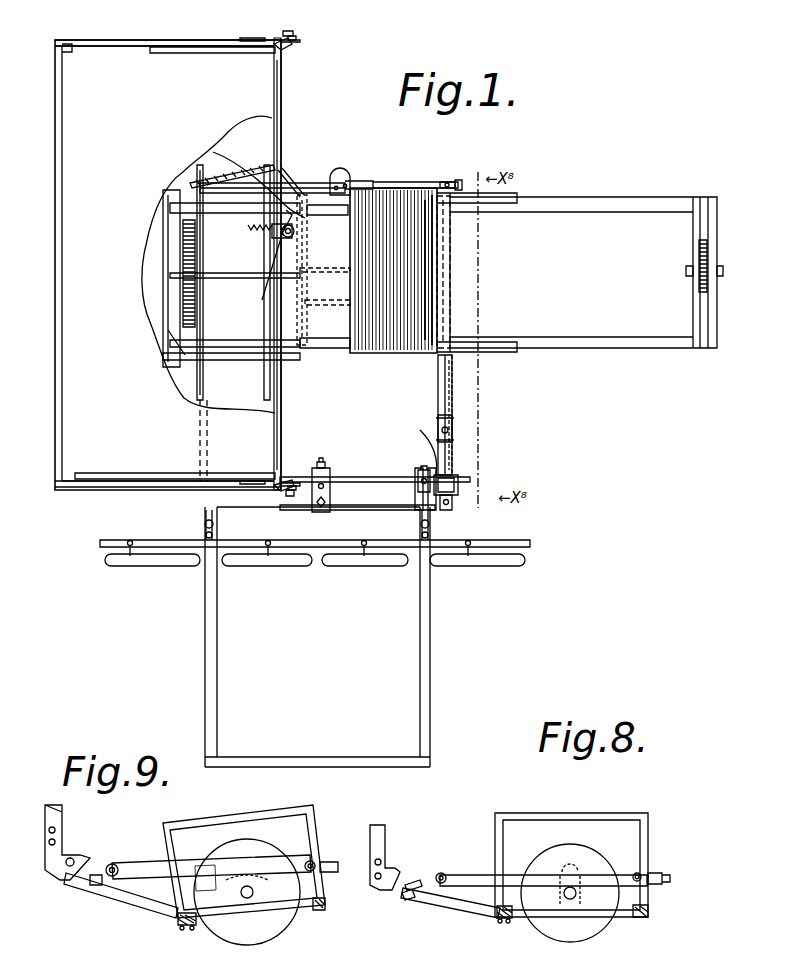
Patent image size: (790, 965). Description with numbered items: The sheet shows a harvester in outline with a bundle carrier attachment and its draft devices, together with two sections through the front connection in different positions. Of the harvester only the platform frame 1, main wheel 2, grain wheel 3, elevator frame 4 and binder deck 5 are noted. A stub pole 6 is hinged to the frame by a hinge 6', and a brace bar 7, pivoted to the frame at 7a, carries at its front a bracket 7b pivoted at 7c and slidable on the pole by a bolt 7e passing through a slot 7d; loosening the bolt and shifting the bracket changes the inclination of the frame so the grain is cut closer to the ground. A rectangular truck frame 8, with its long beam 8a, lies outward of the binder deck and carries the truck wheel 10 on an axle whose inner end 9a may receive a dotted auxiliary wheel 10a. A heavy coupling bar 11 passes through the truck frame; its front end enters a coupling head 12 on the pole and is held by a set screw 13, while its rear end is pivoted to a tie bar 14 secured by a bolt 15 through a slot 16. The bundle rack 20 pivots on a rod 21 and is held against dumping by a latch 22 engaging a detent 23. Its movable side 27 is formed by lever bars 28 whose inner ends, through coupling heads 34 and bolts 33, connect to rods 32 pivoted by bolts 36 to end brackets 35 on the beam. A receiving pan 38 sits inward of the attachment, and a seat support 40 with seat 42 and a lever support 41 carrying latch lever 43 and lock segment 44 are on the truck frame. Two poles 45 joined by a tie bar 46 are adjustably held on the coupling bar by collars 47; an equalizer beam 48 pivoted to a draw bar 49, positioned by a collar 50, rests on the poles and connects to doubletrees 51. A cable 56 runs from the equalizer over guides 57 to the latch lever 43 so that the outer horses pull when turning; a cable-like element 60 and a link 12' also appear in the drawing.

In FIG. 1, the platform frame 1 is at (578, 345).
In FIG. 1, the main or traction wheel 2 is at (450, 240).
In FIG. 9, the main or traction wheel 2 is at (252, 840).
In FIG. 8, the main or traction wheel 2 is at (595, 845).
In FIG. 1, the grain wheel 3 is at (704, 262).
In FIG. 1, the elevator frame 4 is at (500, 196).
In FIG. 1, the binder deck 5 is at (385, 352).
In FIG. 1, the stub pole 6 is at (465, 415).
In FIG. 9, the stub pole 6 is at (121, 908).
In FIG. 8, the stub pole 6 is at (450, 911).
In FIG. 9, the hinge 6' is at (184, 936).
In FIG. 8, the hinge 6' is at (496, 929).
In FIG. 1, the brace bar 7 is at (450, 300).
In FIG. 9, the brace bar 7 is at (211, 873).
In FIG. 8, the brace bar 7 is at (486, 874).
In FIG. 9, the pivot 7a is at (316, 860).
In FIG. 8, the pivot 7a is at (645, 872).
In FIG. 1, the bracket 7b is at (452, 430).
In FIG. 9, the bracket 7b is at (102, 875).
In FIG. 8, the bracket 7b is at (432, 884).
In FIG. 9, the pivot 7c is at (116, 864).
In FIG. 8, the pivot 7c is at (446, 873).
In FIG. 8, the slot 7d is at (433, 900).
In FIG. 9, the bolt 7e is at (88, 884).
In FIG. 8, the bolt 7e is at (405, 898).
In FIG. 1, the supplemental truck frame 8 is at (228, 355).
In FIG. 1, the beam 8a is at (281, 88).
In FIG. 1, the inner end of axle 9a is at (338, 272).
In FIG. 1, the truck wheel 10 is at (185, 312).
In FIG. 1, the auxiliary wheel 10a is at (340, 304).
In FIG. 1, the coupling bar 11 is at (195, 266).
In FIG. 1, the coupling head 12 is at (467, 469).
In FIG. 1, the link 12' is at (418, 443).
In FIG. 1, the set screw 13 is at (458, 494).
In FIG. 1, the tie bar 14 is at (418, 182).
In FIG. 1, the bolt 15 is at (458, 180).
In FIG. 9, the bolt 15 is at (334, 874).
In FIG. 8, the bolt 15 is at (670, 877).
In FIG. 1, the slot 16 is at (448, 182).
In FIG. 1, the bundle carrying rack 20 is at (172, 60).
In FIG. 1, the rod 21 is at (178, 385).
In FIG. 1, the latch 22 is at (282, 236).
In FIG. 1, the detent 23 is at (270, 228).
In FIG. 1, the movable side section 27 is at (55, 287).
In FIG. 1, the lever bars 28 is at (218, 46).
In FIG. 1, the rods 32 is at (290, 44).
In FIG. 1, the bolts 33 is at (290, 40).
In FIG. 1, the coupling heads 34 is at (254, 38).
In FIG. 1, the end brackets 35 is at (296, 38).
In FIG. 1, the bolts 36 is at (294, 33).
In FIG. 1, the receiving pan 38 is at (322, 336).
In FIG. 1, the seat support 40 is at (308, 184).
In FIG. 1, the foot rest and lever support 41 is at (325, 212).
In FIG. 1, the operator's seat 42 is at (342, 176).
In FIG. 1, the latch lever 43 is at (310, 200).
In FIG. 1, the lock segment 44 is at (292, 230).
In FIG. 1, the poles 45 is at (217, 670).
In FIG. 1, the tie bar 46 is at (316, 757).
In FIG. 1, the collars 47 is at (420, 470).
In FIG. 1, the equalizer draft beam 48 is at (360, 505).
In FIG. 1, the draw bar 49 is at (330, 470).
In FIG. 1, the collar 50 is at (323, 462).
In FIG. 1, the doubletrees 51 is at (170, 550).
In FIG. 1, the cable 56 is at (252, 172).
In FIG. 1, the guides 57 is at (280, 165).
In FIG. 1, the cable 60 is at (218, 160).